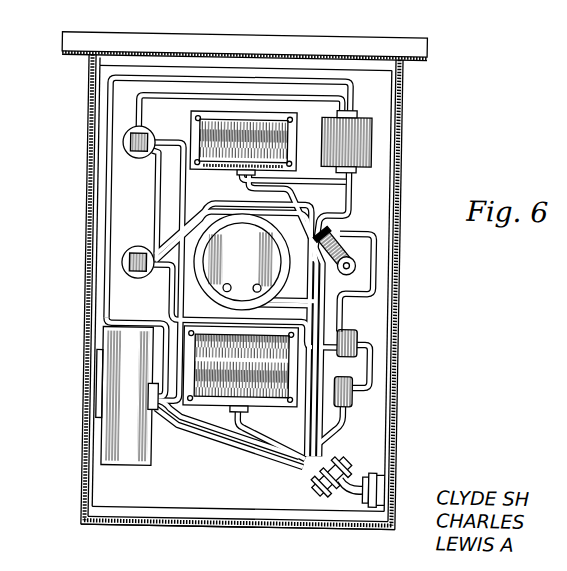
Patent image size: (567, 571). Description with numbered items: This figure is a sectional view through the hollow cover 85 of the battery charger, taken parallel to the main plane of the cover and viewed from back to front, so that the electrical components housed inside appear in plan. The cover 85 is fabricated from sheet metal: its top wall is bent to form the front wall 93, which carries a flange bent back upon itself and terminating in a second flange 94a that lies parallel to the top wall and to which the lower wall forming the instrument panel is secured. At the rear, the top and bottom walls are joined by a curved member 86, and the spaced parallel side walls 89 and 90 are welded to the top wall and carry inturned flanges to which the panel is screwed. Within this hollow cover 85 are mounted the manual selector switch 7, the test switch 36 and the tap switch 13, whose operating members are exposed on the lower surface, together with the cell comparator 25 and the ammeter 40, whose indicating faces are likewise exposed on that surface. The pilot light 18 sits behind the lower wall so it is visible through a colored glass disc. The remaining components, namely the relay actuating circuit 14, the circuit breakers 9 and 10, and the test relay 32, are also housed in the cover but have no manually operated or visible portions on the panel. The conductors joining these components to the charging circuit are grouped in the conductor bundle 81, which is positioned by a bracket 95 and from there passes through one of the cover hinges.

The manual selector switch 7 is at (132, 254).
The circuit breaker 9 is at (355, 332).
The circuit breaker 10 is at (354, 398).
The tap switch 13 is at (240, 369).
The relay actuating circuit 14 is at (127, 395).
The pilot light 18 is at (343, 272).
The cell comparator 25 is at (243, 143).
The test relay 32 is at (346, 141).
The test switch 36 is at (131, 128).
The ammeter 40 is at (242, 262).
The conductor bundle 81 is at (316, 472).
The hollow cover 85 is at (80, 210).
The curved member 86 is at (262, 528).
The side wall 89 is at (399, 390).
The side wall 90 is at (88, 316).
The front wall 93 is at (165, 40).
The second flange 94a is at (108, 63).
The bracket 95 is at (320, 492).